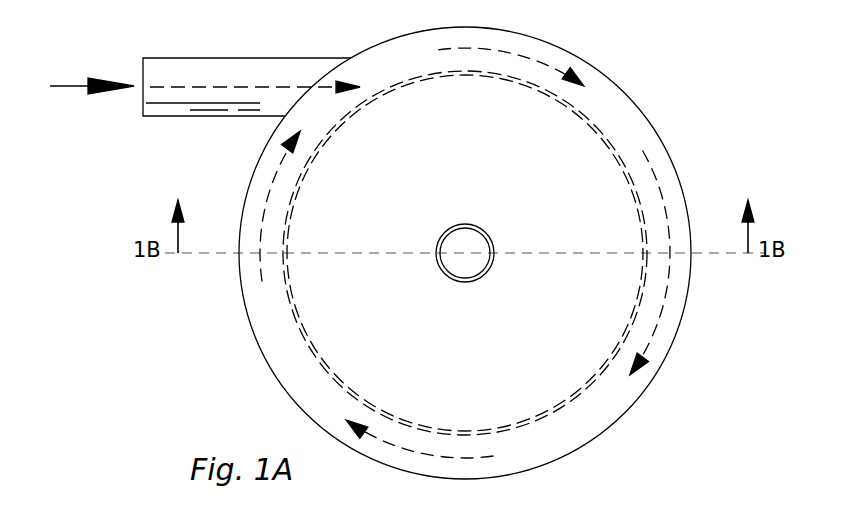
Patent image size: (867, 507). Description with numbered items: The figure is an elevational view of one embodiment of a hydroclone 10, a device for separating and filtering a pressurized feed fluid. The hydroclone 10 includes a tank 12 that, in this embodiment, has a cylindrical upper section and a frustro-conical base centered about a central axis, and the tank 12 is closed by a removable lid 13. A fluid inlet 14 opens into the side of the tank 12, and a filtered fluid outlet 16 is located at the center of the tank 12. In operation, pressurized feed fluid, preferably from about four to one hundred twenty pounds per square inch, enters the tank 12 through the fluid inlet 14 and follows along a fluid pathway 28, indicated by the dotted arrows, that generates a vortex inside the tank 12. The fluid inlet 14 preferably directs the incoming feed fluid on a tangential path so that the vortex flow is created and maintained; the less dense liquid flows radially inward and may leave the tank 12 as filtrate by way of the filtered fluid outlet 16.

The hydroclone 10 is at (680, 92).
The tank 12 is at (682, 317).
The removable lid 13 is at (658, 180).
The fluid inlet 14 is at (227, 57).
The filtered fluid outlet 16 is at (445, 280).
The fluid pathway 28 is at (530, 53).